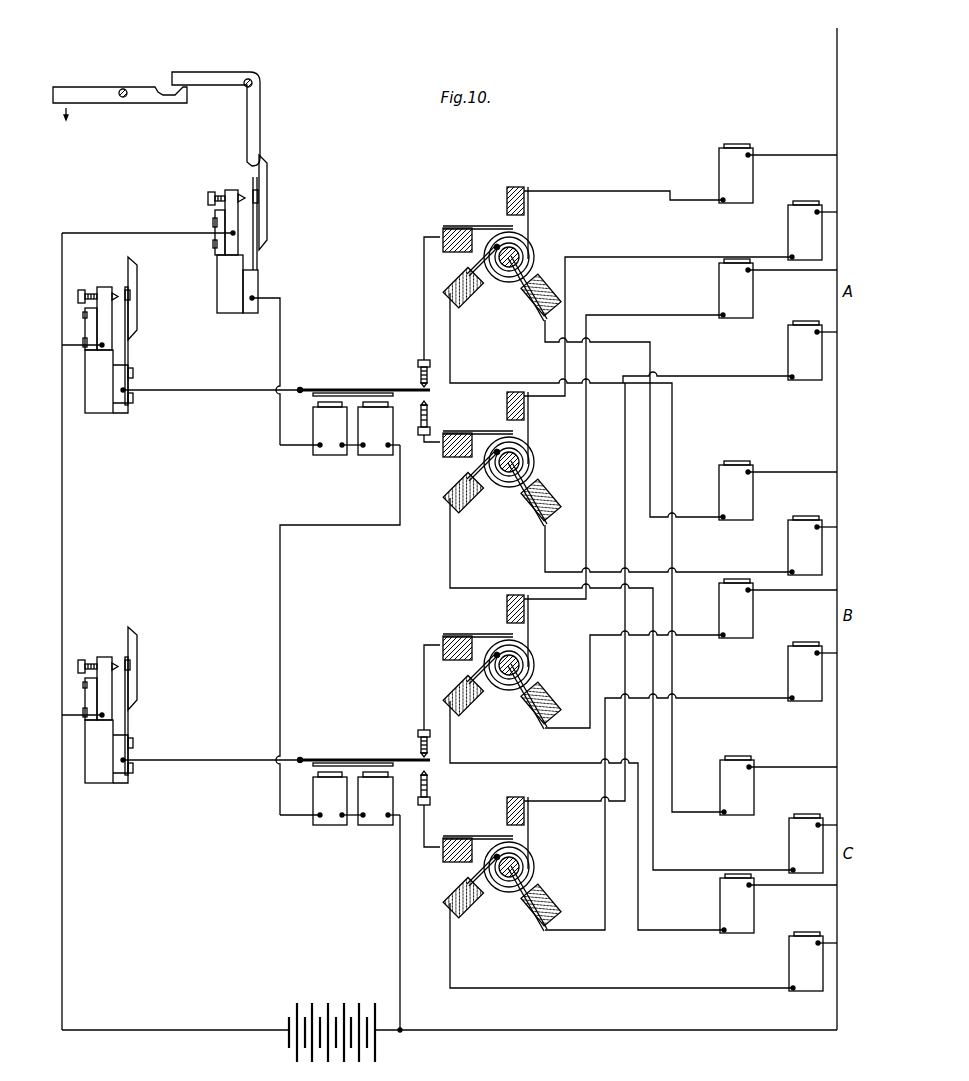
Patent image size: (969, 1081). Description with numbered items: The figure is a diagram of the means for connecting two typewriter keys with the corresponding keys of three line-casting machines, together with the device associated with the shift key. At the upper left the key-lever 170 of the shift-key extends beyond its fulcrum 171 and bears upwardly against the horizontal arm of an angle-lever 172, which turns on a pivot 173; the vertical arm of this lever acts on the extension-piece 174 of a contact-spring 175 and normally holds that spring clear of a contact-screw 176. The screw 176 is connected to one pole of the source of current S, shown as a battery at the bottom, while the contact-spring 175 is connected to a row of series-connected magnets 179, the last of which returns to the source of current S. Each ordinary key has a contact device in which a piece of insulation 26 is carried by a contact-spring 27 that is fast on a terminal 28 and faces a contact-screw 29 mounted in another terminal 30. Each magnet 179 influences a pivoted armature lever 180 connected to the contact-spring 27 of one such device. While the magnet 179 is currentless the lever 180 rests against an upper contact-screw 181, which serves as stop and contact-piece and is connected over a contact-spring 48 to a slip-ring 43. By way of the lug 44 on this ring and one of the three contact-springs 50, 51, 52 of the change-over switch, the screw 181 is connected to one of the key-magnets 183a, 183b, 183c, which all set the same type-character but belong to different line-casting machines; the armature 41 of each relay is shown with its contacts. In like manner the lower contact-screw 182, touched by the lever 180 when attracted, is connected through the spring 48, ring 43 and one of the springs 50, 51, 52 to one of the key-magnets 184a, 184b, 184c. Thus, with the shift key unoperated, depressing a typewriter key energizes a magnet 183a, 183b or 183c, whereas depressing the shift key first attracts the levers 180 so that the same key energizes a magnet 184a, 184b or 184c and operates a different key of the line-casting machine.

The key-lever 170 is at (93, 104).
The fulcrum 171 is at (125, 89).
The angle-lever 172 is at (215, 86).
The pivot pin 173 is at (253, 84).
The extension-piece 174 is at (267, 178).
The contact-spring 175 is at (258, 256).
The contact-screw 176 is at (208, 198).
The piece of insulation 26 is at (137, 304).
The contact-spring 27 is at (131, 354).
The terminal 28 is at (134, 384).
The contact-screw 29 is at (112, 291).
The terminal 30 is at (100, 323).
The magnets 179 is at (340, 613).
The armature lever 180 is at (350, 388).
The upper contact-screw 181 is at (418, 376).
The lower contact-screw 182 is at (430, 416).
The armature arm 41 is at (510, 265).
The slip-ring 43 is at (534, 258).
The lug 44 is at (496, 245).
The contact-spring 48 is at (460, 228).
The contact-spring 50 is at (529, 217).
The contact-spring 51 is at (536, 286).
The contact-spring 52 is at (467, 265).
The key-magnet 183a is at (719, 172).
The key-magnet 184a is at (790, 229).
The key-magnet 183b is at (719, 484).
The key-magnet 184b is at (788, 541).
The key-magnet 183c is at (720, 779).
The key-magnet 184c is at (789, 838).
The source of current S is at (332, 1020).